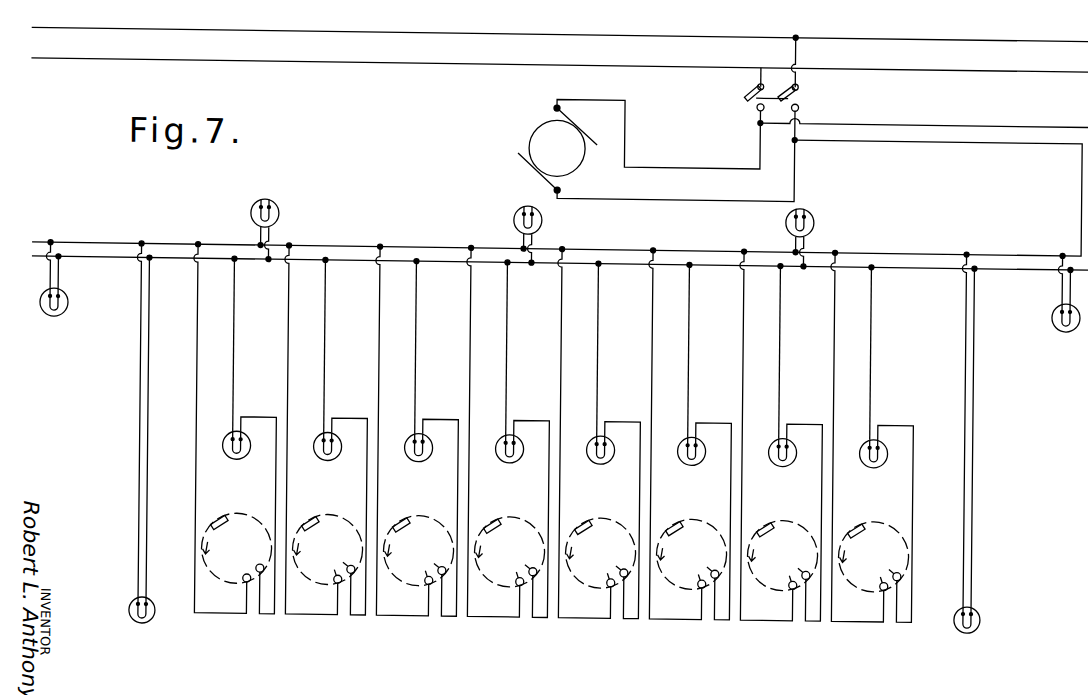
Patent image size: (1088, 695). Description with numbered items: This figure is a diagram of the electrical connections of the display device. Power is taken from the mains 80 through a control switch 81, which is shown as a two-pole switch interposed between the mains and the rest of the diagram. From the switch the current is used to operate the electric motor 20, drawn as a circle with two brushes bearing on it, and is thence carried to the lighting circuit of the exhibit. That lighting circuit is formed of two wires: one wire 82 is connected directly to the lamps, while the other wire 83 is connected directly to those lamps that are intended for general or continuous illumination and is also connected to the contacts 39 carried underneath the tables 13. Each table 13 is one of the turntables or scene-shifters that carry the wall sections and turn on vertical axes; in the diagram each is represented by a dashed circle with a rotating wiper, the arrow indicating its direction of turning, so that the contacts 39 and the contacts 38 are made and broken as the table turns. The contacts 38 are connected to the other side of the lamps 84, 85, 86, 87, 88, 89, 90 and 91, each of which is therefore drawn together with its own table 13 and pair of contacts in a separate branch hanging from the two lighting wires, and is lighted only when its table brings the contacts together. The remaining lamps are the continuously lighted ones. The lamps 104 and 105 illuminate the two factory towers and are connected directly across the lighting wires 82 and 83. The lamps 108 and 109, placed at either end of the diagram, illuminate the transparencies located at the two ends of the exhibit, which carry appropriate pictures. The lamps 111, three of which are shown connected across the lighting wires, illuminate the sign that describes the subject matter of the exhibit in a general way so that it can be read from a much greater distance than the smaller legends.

The mains 80 is at (349, 25).
The control switch 81 is at (784, 73).
The wire 82 is at (1000, 114).
The wire 83 is at (963, 130).
The electric motor 20 is at (539, 135).
The lamps 111 is at (282, 210).
The lamp 108 is at (53, 321).
The lamp 109 is at (1063, 316).
The lamp 104 is at (149, 619).
The lamp 105 is at (968, 620).
The lamp 84 is at (242, 456).
The lamp 85 is at (334, 456).
The lamp 86 is at (424, 456).
The lamp 87 is at (516, 456).
The lamp 88 is at (606, 456).
The lamp 89 is at (698, 456).
The lamp 90 is at (788, 456).
The lamp 91 is at (880, 456).
The turntable 13 is at (555, 553).
The contacts 38 is at (266, 560).
The contacts 39 is at (251, 572).